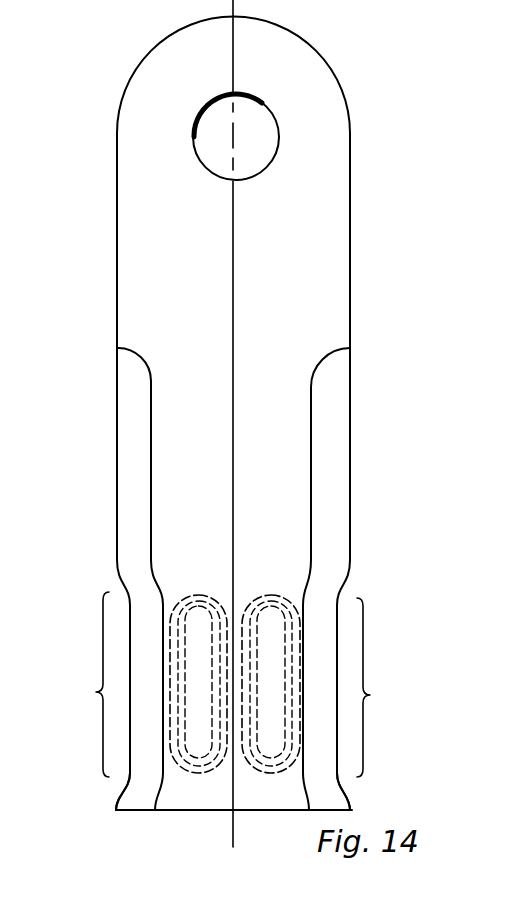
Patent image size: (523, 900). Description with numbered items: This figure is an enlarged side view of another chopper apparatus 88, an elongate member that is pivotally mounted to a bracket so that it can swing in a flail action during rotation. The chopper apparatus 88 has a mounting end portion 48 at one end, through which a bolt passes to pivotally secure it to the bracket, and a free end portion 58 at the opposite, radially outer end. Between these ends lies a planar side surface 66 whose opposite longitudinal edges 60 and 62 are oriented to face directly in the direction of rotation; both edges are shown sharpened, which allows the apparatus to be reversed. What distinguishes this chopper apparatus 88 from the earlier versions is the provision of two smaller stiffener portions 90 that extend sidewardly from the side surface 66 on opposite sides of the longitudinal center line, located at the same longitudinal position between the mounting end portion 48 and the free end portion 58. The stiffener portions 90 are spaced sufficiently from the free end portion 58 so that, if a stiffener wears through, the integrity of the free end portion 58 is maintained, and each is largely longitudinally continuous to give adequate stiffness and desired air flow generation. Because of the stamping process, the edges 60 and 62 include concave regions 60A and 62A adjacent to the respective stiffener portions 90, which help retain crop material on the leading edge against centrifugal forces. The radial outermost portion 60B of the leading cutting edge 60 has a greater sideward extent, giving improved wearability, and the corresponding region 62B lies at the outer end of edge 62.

The chopper apparatus 88 is at (256, 444).
The mounting end portion 48 is at (350, 137).
The planar side surface 66 is at (325, 306).
The longitudinal edge 62 is at (117, 537).
The longitudinal edge 60 is at (352, 543).
The concave region 62A is at (74, 684).
The concave region 60A is at (393, 687).
The stiffener portion 90 is at (196, 595).
The free end portion 58 is at (353, 800).
The radial outermost portion 60B is at (353, 808).
The first leg foot 62B is at (116, 805).